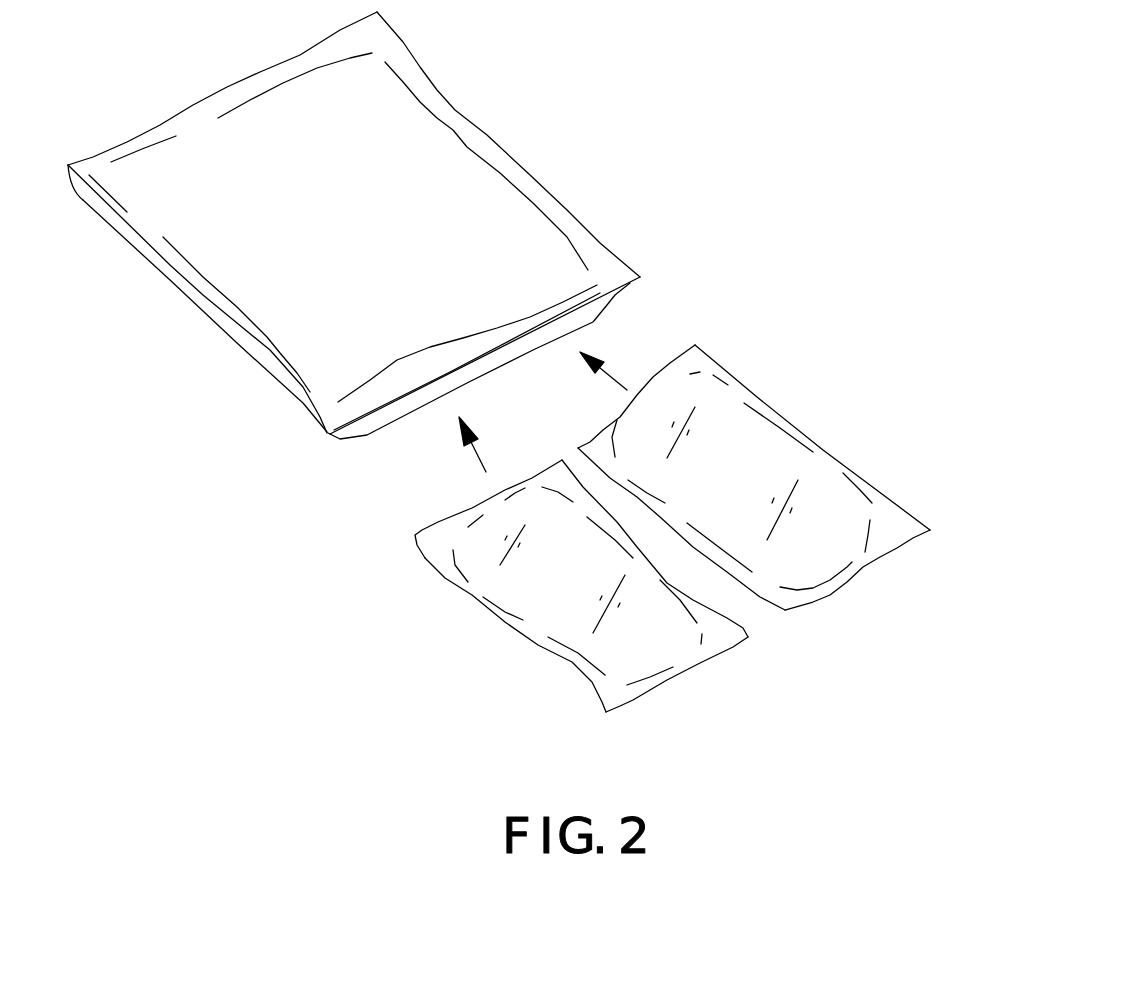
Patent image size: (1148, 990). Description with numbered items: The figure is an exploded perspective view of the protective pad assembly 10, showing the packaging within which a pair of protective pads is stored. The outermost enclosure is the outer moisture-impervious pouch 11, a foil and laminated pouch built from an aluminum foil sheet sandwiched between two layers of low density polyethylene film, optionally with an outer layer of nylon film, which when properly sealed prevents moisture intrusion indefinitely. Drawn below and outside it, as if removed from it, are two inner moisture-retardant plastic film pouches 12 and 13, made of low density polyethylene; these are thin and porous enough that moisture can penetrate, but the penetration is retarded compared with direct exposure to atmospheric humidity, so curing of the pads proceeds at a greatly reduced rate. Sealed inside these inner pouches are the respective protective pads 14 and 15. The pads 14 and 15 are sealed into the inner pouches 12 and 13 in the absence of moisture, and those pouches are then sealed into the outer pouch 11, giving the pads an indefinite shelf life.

The protective pad assembly 10 is at (520, 394).
The outer moisture-impervious pouch 11 is at (354, 225).
The inner moisture-retardant plastic film pouch 12 is at (775, 477).
The inner moisture-retardant plastic film pouch 13 is at (581, 618).
The protective pad 14 is at (818, 477).
The protective pad 15 is at (477, 630).